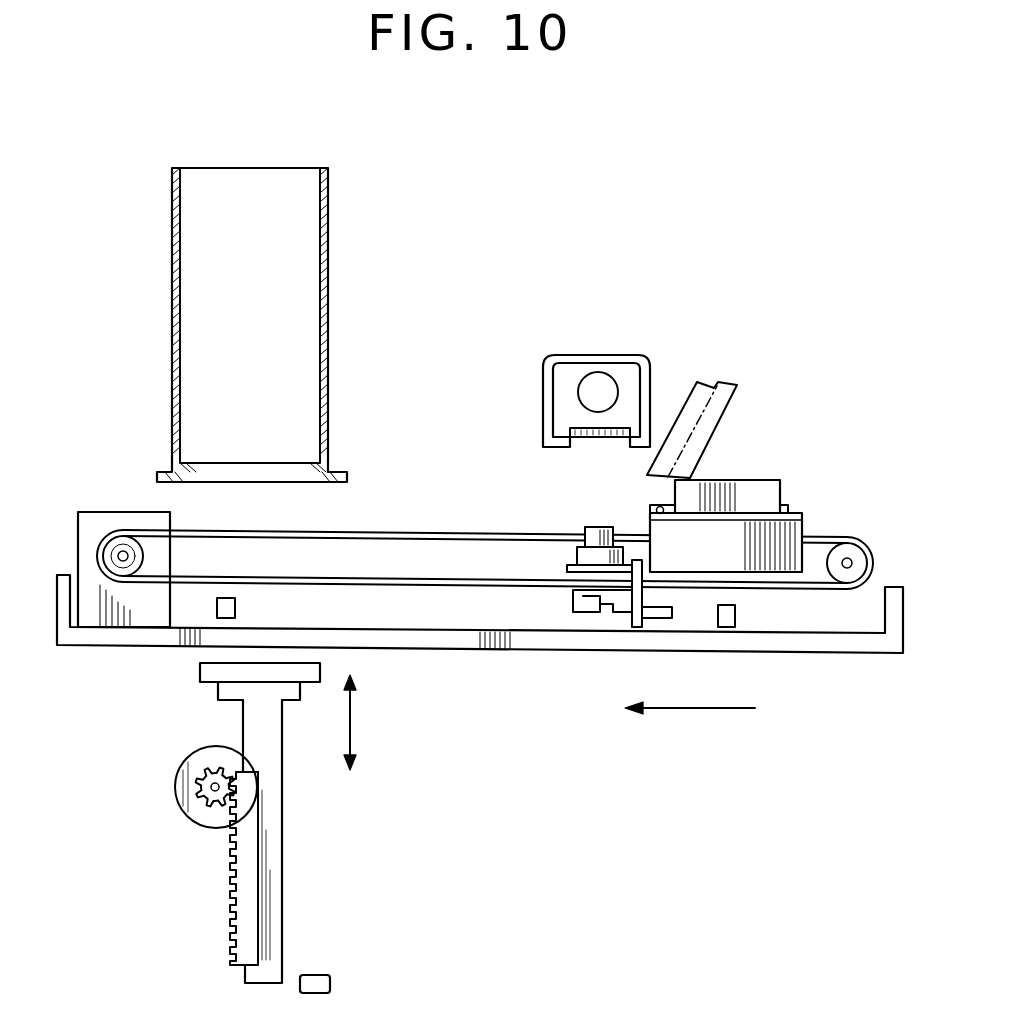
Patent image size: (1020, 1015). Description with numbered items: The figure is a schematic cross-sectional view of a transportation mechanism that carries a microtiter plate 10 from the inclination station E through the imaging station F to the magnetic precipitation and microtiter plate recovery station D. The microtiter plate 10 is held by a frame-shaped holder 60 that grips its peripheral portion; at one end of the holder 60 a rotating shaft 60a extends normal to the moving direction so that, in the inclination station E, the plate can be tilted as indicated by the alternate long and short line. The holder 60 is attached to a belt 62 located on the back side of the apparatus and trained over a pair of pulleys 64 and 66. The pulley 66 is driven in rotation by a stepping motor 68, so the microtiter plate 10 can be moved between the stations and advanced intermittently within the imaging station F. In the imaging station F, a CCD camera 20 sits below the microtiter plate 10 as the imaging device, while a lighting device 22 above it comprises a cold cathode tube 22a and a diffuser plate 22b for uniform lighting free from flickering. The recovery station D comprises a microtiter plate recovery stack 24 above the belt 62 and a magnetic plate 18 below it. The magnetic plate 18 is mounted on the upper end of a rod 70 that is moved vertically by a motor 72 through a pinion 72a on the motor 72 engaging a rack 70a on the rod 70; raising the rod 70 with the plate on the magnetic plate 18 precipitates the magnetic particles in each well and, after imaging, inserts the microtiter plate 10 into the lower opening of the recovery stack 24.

The microtiter plate 10 is at (748, 481).
The magnetic plate 18 is at (206, 668).
The CCD camera 20 is at (594, 527).
The lighting device 22 is at (562, 385).
The cold cathode tube 22a is at (578, 393).
The diffuser plate 22b is at (585, 440).
The microtiter plate recovery stack 24 is at (172, 377).
The holder 60 is at (704, 510).
The rotating shaft 60a is at (656, 508).
The belt 62 is at (838, 542).
The pulley 64 is at (862, 550).
The pulley 66 is at (121, 533).
The stepping motor 68 is at (118, 546).
The rod 70 is at (256, 841).
The rack 70a is at (232, 912).
The motor 72 is at (186, 800).
The pinion 72a is at (208, 767).
The magnetic precipitation and microtiter plate recovery station D is at (252, 312).
The inclination station E is at (744, 378).
The imaging station F is at (562, 356).